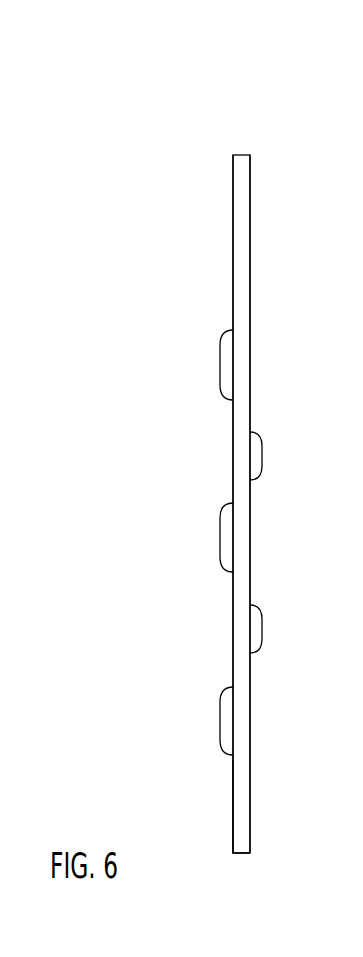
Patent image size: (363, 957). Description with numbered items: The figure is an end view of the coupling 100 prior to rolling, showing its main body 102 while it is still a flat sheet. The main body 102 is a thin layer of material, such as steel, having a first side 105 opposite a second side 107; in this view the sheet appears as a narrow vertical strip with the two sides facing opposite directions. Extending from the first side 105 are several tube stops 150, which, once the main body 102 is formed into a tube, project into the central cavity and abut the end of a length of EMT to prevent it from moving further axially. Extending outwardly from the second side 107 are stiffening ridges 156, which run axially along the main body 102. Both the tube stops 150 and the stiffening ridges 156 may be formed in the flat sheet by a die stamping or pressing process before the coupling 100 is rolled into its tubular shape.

The coupling 100 is at (226, 128).
The main body 102 is at (240, 822).
The first side 105 is at (233, 780).
The second side 107 is at (250, 206).
The tube stops 150 is at (220, 365).
The stiffening ridges 156 is at (262, 457).